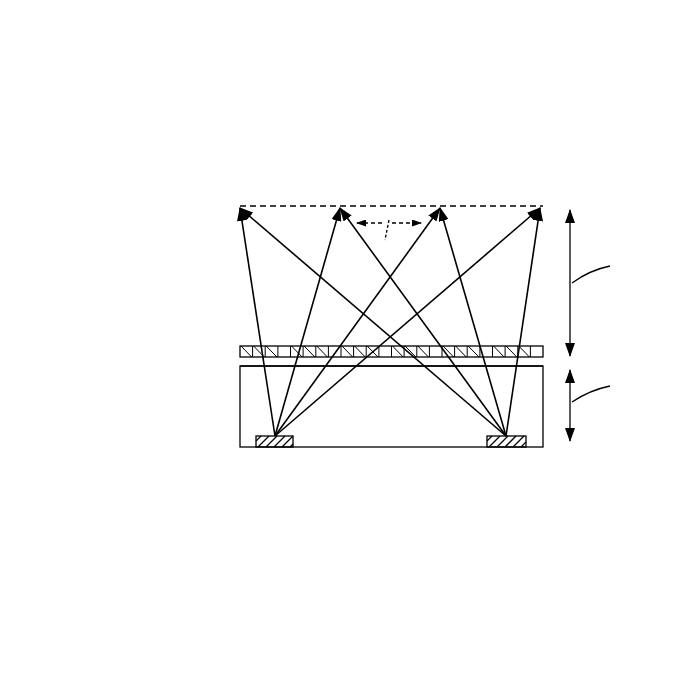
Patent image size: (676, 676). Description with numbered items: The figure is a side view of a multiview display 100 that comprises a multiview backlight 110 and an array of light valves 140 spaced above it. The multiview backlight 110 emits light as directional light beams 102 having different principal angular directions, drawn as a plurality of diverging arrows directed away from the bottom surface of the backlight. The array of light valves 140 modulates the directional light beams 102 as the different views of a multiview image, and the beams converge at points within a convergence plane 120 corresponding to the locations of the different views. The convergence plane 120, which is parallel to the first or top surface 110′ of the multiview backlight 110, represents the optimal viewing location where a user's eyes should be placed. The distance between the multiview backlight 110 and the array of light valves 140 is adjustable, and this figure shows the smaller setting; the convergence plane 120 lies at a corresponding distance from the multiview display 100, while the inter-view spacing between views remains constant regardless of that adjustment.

The multiview display 100 is at (178, 128).
The directional light beams 102 is at (243, 257).
The multiview backlight 110 is at (238, 420).
The first surface 110′ is at (240, 366).
The convergence plane 120 is at (268, 205).
The array of light valves 140 is at (240, 352).